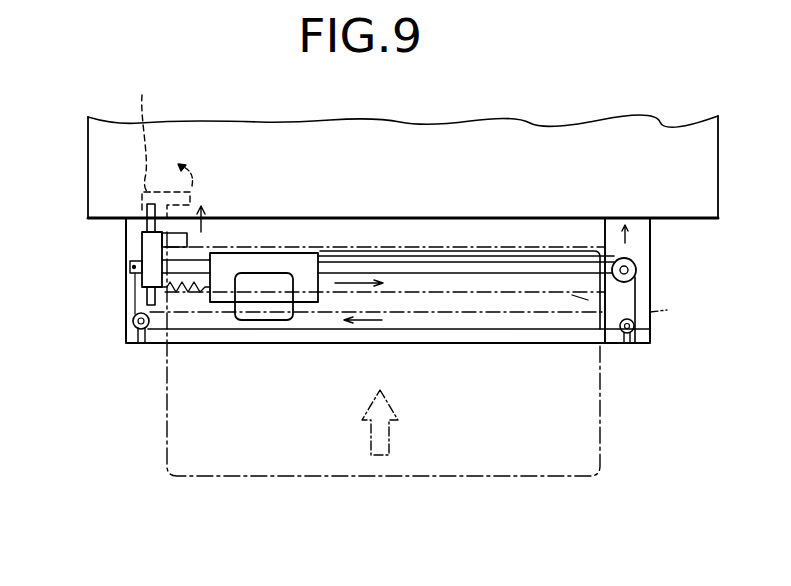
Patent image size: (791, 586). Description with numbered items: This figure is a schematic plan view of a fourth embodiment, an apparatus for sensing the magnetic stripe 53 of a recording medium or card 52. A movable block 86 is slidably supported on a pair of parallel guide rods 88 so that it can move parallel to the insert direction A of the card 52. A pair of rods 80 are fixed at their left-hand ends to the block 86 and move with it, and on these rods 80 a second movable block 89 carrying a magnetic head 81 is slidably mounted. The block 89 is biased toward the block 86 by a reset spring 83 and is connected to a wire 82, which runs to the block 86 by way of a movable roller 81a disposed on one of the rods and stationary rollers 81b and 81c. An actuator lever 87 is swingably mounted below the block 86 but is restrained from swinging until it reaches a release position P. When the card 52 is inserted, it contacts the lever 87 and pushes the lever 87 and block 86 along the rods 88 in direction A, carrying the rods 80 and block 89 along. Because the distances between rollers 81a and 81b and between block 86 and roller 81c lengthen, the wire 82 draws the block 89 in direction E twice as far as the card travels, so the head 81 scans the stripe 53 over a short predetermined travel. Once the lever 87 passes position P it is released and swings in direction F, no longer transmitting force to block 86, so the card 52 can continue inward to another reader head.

The recording medium 52 is at (600, 452).
The magnetic stripe 53 is at (667, 310).
The guide rods 80 is at (447, 277).
The magnetic head 81 is at (278, 310).
The movable roller 81a is at (637, 270).
The stationary roller 81b is at (630, 333).
The stationary roller 81c is at (134, 330).
The wire 82 is at (575, 337).
The reset spring 83 is at (180, 290).
The movable block 86 is at (142, 249).
The actuator lever 87 is at (178, 232).
The guide rods 88 is at (147, 224).
The movable block 89 is at (265, 262).
The release position P is at (159, 145).
The swing direction F is at (178, 166).
The insert direction A is at (308, 333).
The head movement direction E is at (365, 282).